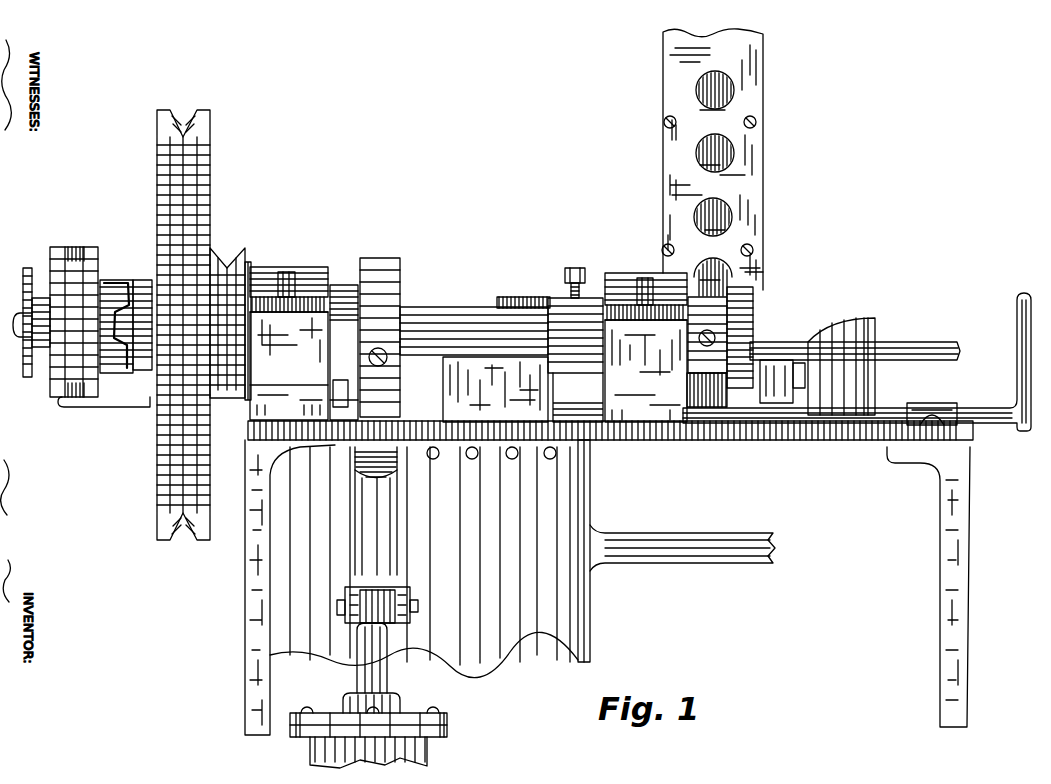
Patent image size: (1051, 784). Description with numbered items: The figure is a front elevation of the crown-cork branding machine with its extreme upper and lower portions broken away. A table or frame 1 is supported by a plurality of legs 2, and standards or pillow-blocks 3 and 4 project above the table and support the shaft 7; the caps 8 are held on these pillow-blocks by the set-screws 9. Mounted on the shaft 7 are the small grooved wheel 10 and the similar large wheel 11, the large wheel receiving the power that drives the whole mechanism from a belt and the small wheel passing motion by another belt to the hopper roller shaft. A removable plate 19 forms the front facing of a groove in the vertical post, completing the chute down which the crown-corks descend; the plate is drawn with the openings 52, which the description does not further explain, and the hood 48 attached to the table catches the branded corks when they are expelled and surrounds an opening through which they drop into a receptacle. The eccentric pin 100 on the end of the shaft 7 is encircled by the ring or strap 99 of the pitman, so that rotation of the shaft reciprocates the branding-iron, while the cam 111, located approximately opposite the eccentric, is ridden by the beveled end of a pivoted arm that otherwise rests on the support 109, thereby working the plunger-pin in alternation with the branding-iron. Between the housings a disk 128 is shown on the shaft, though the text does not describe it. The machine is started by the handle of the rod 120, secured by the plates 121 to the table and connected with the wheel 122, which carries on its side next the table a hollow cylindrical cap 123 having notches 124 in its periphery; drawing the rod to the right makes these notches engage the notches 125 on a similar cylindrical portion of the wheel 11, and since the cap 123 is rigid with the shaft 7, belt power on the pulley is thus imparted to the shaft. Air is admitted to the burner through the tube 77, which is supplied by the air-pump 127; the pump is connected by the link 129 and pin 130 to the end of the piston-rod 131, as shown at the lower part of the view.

The table or frame 1 is at (795, 447).
The legs 2 is at (245, 694).
The standard or pillow-block 3 is at (304, 352).
The standard or pillow-block 4 is at (646, 371).
The shaft 7 is at (473, 326).
The caps 8 is at (284, 271).
The set-screws 9 is at (306, 280).
The small grooved wheel 10 is at (227, 266).
The large wheel 11 is at (210, 162).
The removable plate 19 is at (757, 112).
The hood 48 is at (873, 399).
The plate holes 52 is at (697, 96).
The tube 77 is at (963, 351).
The ring or strap 99 is at (758, 449).
The eccentric pin 100 is at (810, 343).
The support 109 is at (456, 379).
The cam 111 is at (526, 301).
The rod 120 is at (1005, 434).
The plates 121 is at (950, 413).
The wheel 122 is at (60, 254).
The hollow cylindrical portion or cap 123 is at (111, 282).
The notches 124 is at (118, 366).
The notches 125 is at (120, 405).
The air-pump 127 is at (428, 749).
The disk 128 is at (396, 289).
The link 129 is at (260, 595).
The pin 130 is at (398, 616).
The piston-rod 131 is at (388, 666).